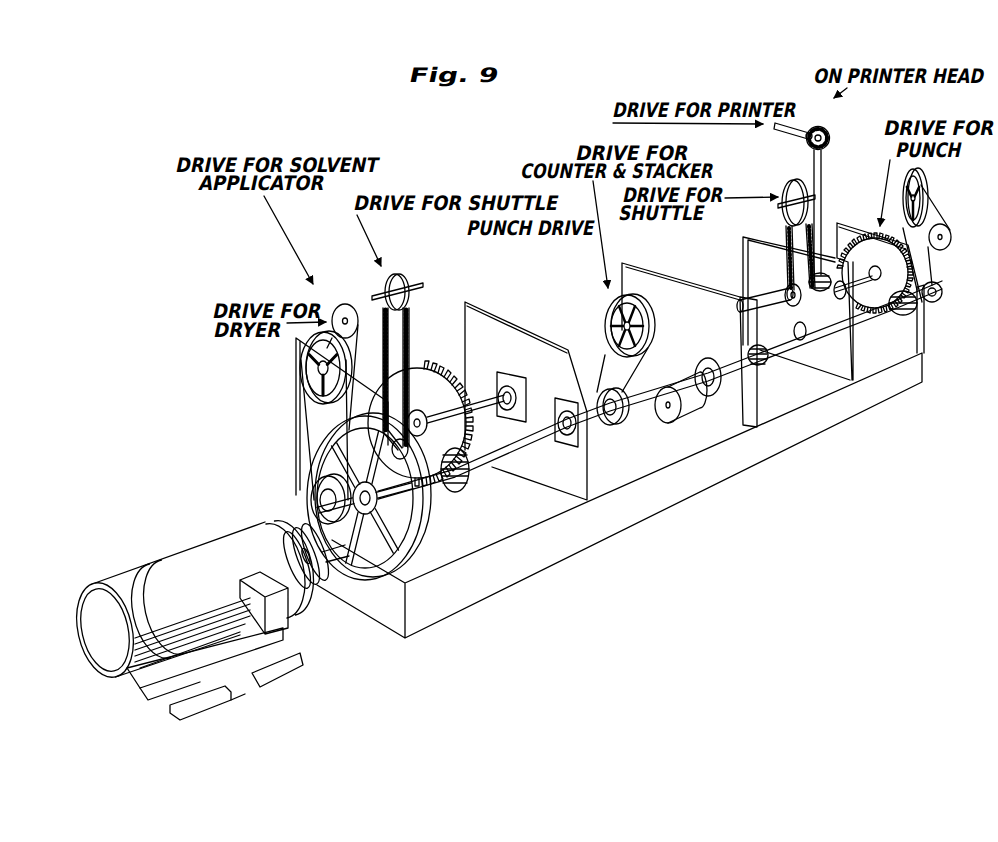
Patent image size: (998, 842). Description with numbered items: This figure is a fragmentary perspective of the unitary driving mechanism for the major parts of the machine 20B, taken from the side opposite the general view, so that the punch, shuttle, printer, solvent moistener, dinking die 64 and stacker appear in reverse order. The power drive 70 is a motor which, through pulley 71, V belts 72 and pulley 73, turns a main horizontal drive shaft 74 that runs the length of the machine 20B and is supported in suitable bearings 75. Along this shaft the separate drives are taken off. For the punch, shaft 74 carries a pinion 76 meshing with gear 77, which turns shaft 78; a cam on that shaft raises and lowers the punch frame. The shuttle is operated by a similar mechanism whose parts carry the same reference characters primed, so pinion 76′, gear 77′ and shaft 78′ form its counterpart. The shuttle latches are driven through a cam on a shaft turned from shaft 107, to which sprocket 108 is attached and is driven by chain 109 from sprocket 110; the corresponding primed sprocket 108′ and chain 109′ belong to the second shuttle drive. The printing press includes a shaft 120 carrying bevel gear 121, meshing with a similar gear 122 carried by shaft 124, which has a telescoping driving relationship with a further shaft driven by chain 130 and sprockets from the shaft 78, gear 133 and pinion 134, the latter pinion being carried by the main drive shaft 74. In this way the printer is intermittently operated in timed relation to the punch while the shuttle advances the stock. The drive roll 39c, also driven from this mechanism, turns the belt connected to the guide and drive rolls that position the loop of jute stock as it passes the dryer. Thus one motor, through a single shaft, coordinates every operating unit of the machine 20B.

The machine 20B is at (619, 494).
The power drive 70 is at (189, 530).
The pulley 71 is at (313, 584).
The V belts 72 is at (348, 585).
The pulley 73 is at (418, 538).
The main horizontal drive shaft 74 is at (273, 496).
The bearings 75 is at (548, 460).
The pinion 76 is at (895, 316).
The pinion 76′ is at (470, 484).
The gear 77 is at (852, 342).
The gear 77′ is at (437, 370).
The shaft 78 is at (850, 284).
The shaft 78′ is at (486, 394).
The drive roll 39c is at (340, 295).
The dinking die 64 is at (453, 336).
The shaft 107 is at (766, 222).
The sprocket 108 is at (790, 178).
The sprocket 108′ is at (396, 275).
The chain 109 is at (724, 243).
The chain 109′ is at (407, 340).
The sprocket 110 is at (406, 445).
The shaft 120 is at (800, 125).
The bevel gear 121 is at (826, 132).
The bevel gear 122 is at (830, 142).
The shaft 124 is at (822, 206).
The chain 130 is at (759, 279).
The gear 133 is at (722, 272).
The pinion 134 is at (768, 362).